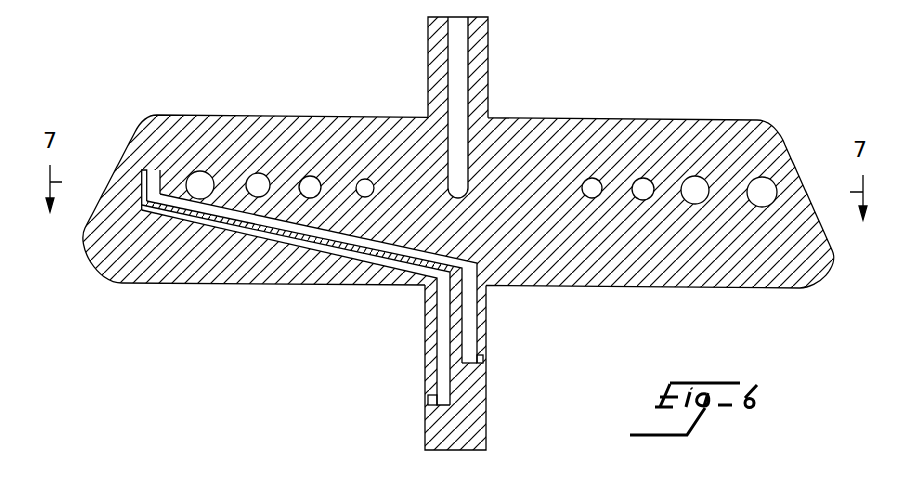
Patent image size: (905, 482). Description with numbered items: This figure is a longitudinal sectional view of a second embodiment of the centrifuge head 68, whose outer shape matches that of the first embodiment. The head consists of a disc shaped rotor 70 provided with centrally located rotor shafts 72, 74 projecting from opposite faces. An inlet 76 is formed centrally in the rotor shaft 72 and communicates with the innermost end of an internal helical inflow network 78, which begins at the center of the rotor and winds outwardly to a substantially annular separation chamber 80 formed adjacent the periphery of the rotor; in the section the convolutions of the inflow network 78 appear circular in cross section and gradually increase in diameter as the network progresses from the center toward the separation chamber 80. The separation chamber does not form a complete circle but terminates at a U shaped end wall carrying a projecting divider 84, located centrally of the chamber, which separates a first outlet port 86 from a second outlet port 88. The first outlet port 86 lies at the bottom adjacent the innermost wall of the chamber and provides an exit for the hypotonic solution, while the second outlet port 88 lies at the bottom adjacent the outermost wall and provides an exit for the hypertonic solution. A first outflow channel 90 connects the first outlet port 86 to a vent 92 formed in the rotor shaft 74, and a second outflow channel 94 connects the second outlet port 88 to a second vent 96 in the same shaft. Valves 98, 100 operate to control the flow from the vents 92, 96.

The centrifuge head 68 is at (251, 289).
The rotor 70 is at (632, 273).
The rotor shaft 72 is at (486, 76).
The rotor shaft 74 is at (487, 433).
The inlet 76 is at (458, 74).
The helical inflow network 78 is at (590, 199).
The separation chamber 80 is at (762, 178).
The projecting divider 84 is at (148, 170).
The first outlet port 86 is at (164, 174).
The second outlet port 88 is at (141, 213).
The first outflow channel 90 is at (351, 238).
The vent 92 is at (485, 360).
The second outflow channel 94 is at (230, 233).
The second vent 96 is at (428, 400).
The valve 98 is at (440, 410).
The valve 100 is at (469, 366).